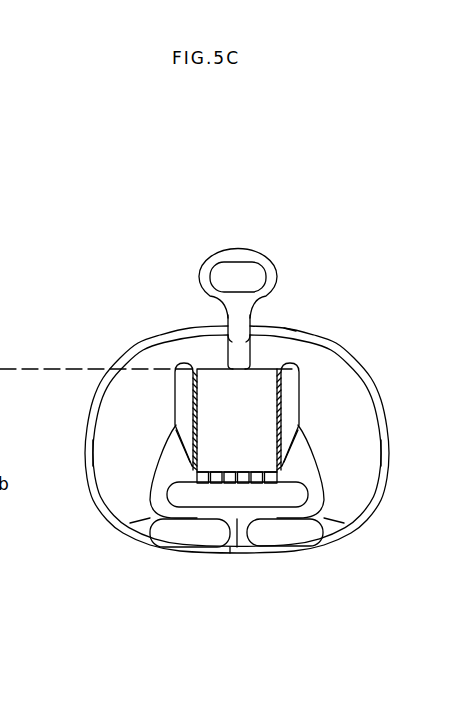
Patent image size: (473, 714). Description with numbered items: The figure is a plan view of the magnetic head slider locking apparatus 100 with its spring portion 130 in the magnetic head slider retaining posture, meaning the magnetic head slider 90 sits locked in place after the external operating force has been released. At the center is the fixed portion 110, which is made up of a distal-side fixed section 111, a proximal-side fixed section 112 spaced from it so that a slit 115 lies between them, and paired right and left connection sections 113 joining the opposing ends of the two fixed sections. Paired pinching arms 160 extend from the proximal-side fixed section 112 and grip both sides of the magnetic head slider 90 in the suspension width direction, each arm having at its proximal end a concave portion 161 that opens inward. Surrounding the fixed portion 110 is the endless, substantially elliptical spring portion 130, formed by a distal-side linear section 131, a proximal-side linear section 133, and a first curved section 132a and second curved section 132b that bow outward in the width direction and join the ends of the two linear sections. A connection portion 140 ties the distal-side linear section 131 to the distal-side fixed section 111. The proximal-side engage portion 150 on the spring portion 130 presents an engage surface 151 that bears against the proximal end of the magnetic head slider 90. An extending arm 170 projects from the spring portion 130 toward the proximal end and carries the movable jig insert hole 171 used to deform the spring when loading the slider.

The magnetic head slider 90 is at (245, 434).
The magnetic head slider locking apparatus 100 is at (320, 255).
The fixed portion 110 is at (145, 492).
The distal-side fixed section 111 is at (190, 548).
The proximal-side fixed section 112 is at (320, 540).
The connection sections 113 is at (132, 523).
The slit 115 is at (237, 489).
The spring portion 130 is at (106, 346).
The distal-side linear section 131 is at (215, 552).
The first curved section 132a is at (90, 452).
The second curved section 132b is at (388, 458).
The proximal-side linear section 133 is at (283, 330).
The connection portion 140 is at (238, 536).
The proximal-side engage portion 150 is at (222, 352).
The engage surface 151 is at (247, 368).
The pinching arms 160 is at (184, 411).
The concave portion 161 is at (180, 460).
The extending arm 170 is at (196, 252).
The movable jig insert hole 171 is at (246, 266).